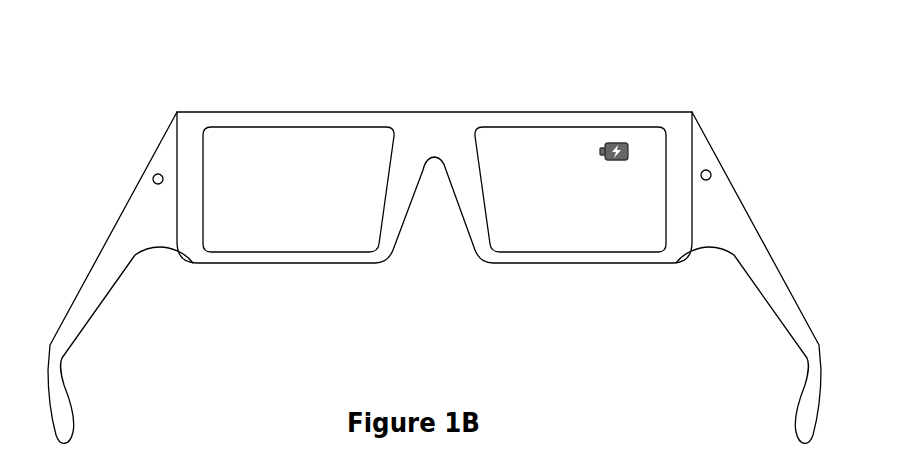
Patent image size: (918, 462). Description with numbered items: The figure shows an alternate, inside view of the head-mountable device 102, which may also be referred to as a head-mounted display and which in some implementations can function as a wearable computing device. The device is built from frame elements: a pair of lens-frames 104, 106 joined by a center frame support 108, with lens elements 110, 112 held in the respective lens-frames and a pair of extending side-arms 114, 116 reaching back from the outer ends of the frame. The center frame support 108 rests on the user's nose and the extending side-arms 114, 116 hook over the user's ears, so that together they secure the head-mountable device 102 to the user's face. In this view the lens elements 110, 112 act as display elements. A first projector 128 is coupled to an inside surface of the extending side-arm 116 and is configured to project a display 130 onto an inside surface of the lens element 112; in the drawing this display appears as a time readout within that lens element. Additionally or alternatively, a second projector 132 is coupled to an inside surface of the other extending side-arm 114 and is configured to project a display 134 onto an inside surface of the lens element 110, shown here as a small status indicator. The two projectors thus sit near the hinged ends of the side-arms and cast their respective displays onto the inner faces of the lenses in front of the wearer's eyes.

The head-mountable device 102 is at (228, 99).
The lens-frame 104 is at (653, 264).
The lens-frame 106 is at (225, 264).
The center frame support 108 is at (433, 112).
The lens element 110 is at (535, 242).
The lens element 112 is at (314, 242).
The extending side-arm 114 is at (745, 214).
The extending side-arm 116 is at (103, 245).
The first projector 128 is at (153, 176).
The display 130 is at (293, 155).
The second projector 132 is at (708, 170).
The display 134 is at (603, 158).